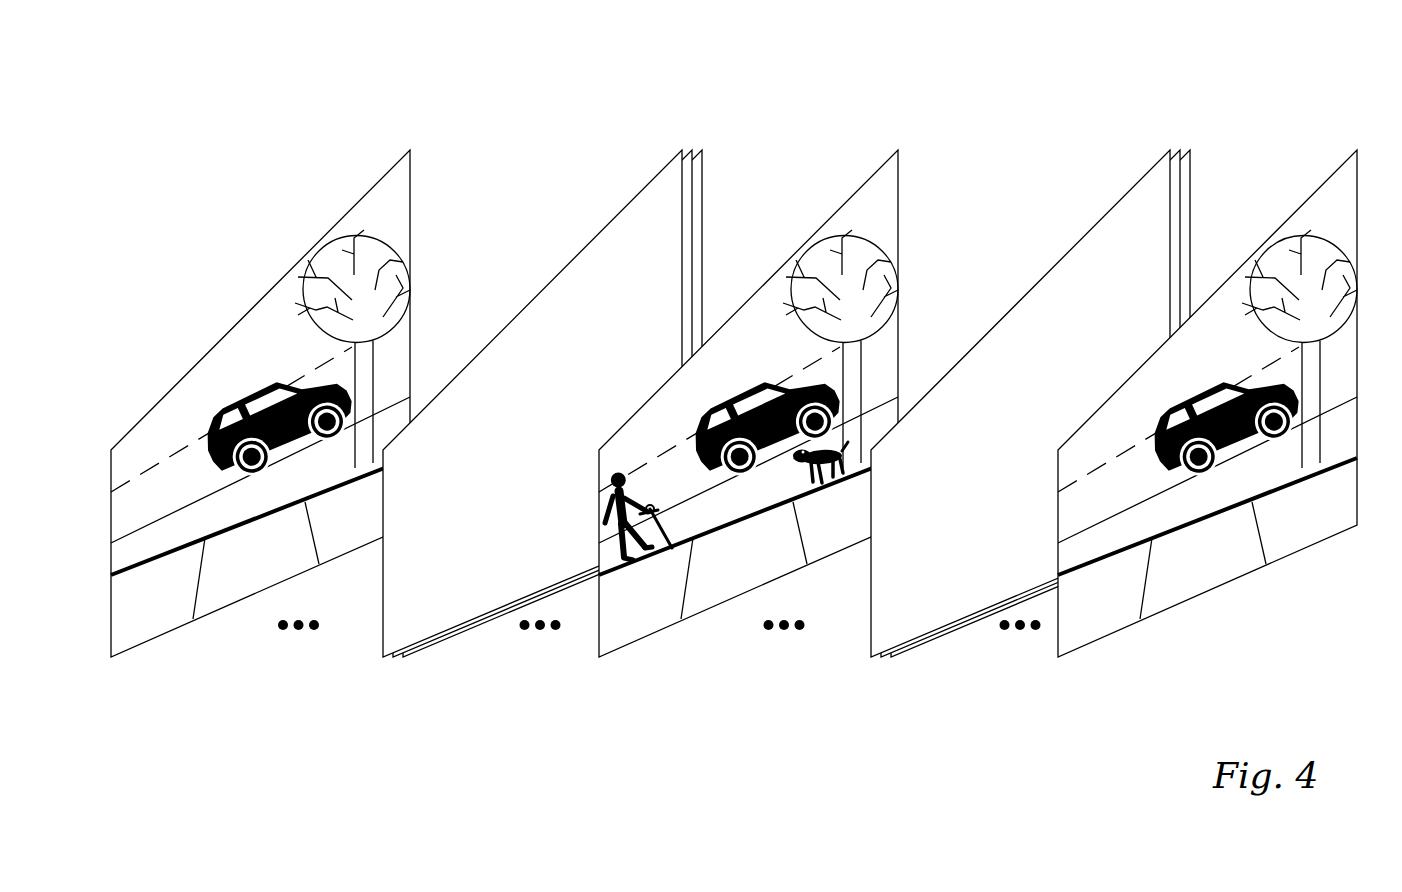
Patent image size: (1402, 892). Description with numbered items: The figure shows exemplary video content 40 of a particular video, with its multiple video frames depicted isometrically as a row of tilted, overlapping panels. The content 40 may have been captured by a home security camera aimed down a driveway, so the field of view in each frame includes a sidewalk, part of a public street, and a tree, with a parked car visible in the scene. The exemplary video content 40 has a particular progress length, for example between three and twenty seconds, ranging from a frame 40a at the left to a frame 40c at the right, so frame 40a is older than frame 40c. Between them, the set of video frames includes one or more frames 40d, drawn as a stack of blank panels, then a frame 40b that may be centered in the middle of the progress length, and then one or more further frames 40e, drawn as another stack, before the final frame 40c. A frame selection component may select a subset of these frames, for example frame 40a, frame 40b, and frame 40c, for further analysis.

The exemplary video content 40 is at (734, 378).
The frame 40a is at (223, 712).
The frame 40b is at (710, 712).
The frame 40c is at (1207, 431).
The frames 40d is at (477, 712).
The frames 40e is at (964, 712).